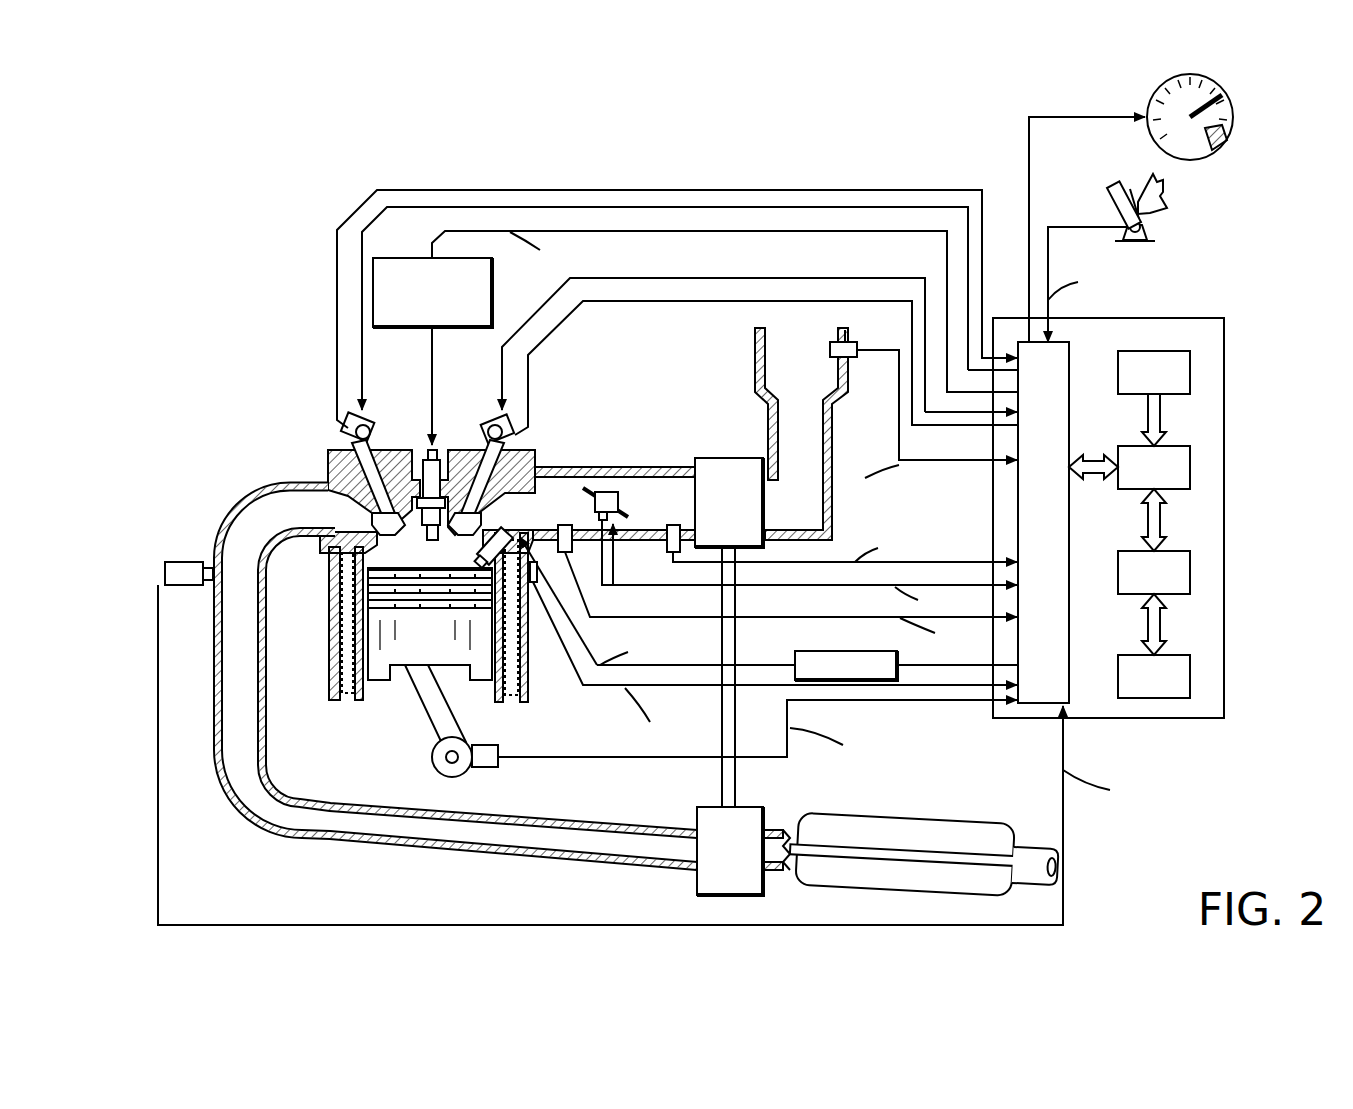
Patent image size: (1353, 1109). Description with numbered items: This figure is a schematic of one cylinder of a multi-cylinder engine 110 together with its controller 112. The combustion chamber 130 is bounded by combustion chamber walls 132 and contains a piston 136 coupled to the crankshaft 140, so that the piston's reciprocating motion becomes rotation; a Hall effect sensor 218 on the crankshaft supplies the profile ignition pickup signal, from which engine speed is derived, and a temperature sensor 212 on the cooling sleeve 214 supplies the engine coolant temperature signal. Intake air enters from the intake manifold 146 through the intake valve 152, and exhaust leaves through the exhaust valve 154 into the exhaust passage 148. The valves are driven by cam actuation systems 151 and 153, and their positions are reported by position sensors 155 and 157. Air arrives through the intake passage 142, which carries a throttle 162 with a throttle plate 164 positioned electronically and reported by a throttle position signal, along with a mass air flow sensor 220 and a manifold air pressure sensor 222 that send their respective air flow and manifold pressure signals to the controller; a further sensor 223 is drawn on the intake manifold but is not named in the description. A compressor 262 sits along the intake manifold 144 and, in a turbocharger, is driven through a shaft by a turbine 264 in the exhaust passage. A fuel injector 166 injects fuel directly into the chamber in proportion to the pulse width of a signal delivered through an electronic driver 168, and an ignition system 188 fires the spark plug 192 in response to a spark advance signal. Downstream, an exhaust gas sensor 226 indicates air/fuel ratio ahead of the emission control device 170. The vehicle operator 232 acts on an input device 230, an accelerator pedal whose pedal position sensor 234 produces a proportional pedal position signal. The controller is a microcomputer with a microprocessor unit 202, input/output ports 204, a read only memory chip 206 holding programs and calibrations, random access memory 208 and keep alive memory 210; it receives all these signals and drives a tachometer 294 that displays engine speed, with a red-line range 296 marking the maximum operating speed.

The engine 110 is at (262, 400).
The controller 112 is at (1151, 505).
The combustion chamber 130 is at (375, 618).
The combustion chamber walls 132 is at (372, 688).
The piston 136 is at (413, 653).
The crankshaft 140 is at (440, 772).
The intake passage 142 is at (801, 434).
The intake manifold 144 is at (614, 503).
The intake manifold 146 is at (565, 500).
The exhaust passage 148 is at (457, 677).
The cam actuation system 151 is at (500, 418).
The intake valve 152 is at (437, 515).
The cam actuation system 153 is at (370, 418).
The exhaust valve 154 is at (345, 495).
The position sensor 155 is at (515, 434).
The position sensor 157 is at (352, 428).
The throttle 162 is at (610, 492).
The throttle plate 164 is at (590, 490).
The fuel injector 166 is at (508, 537).
The electronic driver 168 is at (828, 651).
The emission control device 170 is at (970, 825).
The ignition system 188 is at (392, 258).
The spark plug 192 is at (425, 480).
The microprocessor unit 202 is at (1190, 468).
The input/output ports 204 is at (1075, 342).
The read only memory chip 206 is at (1190, 375).
The random access memory 208 is at (1190, 575).
The keep alive memory 210 is at (1190, 680).
The temperature sensor 212 is at (537, 585).
The cooling sleeve 214 is at (512, 652).
The Hall effect sensor 218 is at (490, 768).
The mass air flow sensor 220 is at (850, 342).
The manifold air pressure sensor 222 is at (568, 552).
The boost pressure sensor 223 is at (667, 550).
The exhaust gas sensor 226 is at (165, 572).
The input device 230 is at (1115, 200).
The vehicle operator 232 is at (1165, 190).
The pedal position sensor 234 is at (1150, 232).
The compressor 262 is at (710, 458).
The turbine 264 is at (697, 880).
The tachometer 294 is at (1179, 208).
The red-line range 296 is at (1225, 135).